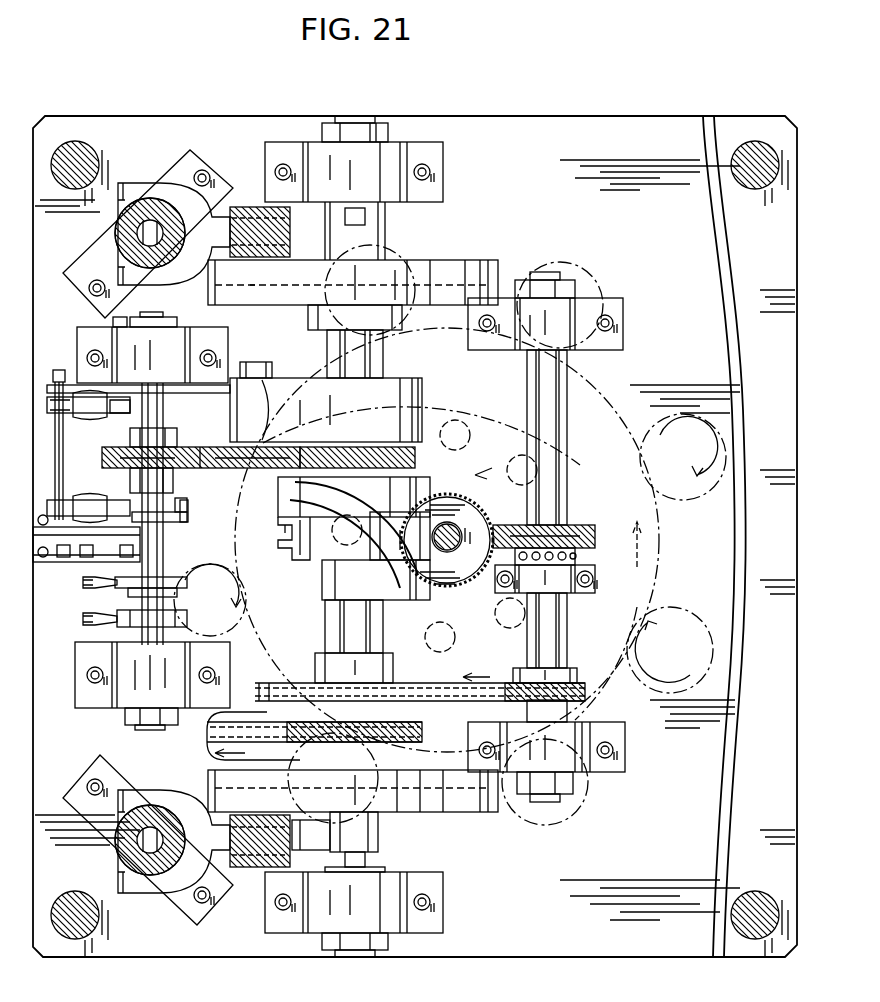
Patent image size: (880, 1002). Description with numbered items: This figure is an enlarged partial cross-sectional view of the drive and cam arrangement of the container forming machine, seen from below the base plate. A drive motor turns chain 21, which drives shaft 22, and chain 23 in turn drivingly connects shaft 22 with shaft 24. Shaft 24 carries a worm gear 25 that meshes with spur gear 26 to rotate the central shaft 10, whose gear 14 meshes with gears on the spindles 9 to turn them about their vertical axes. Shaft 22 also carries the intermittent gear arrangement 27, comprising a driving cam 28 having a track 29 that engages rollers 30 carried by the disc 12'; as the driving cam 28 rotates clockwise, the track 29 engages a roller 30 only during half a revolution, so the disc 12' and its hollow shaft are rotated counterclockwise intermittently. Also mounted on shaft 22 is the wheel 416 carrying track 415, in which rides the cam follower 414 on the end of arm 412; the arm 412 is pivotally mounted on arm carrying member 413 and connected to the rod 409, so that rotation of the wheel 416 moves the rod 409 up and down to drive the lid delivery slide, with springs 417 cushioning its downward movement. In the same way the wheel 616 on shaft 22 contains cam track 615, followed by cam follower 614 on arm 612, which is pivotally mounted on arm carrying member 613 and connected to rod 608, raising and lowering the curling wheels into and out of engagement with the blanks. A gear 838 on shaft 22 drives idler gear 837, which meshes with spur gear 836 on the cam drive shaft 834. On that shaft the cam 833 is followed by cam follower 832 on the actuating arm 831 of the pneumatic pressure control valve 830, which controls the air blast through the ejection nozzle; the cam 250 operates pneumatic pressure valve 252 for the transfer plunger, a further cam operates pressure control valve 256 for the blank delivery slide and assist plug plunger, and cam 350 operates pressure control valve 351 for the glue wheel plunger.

The spindles 9 is at (688, 500).
The shaft 10 is at (457, 532).
The disc 12' is at (447, 540).
The gear 14 is at (652, 578).
The chain 21 is at (210, 724).
The shaft 22 is at (332, 624).
The chain 23 is at (588, 689).
The shaft 24 is at (557, 643).
The worm gear 25 is at (590, 523).
The spur gear 26 is at (462, 580).
The intermittent gear arrangement 27 is at (422, 606).
The driving cam 28 is at (326, 576).
The track 29 is at (300, 497).
The rollers 30 is at (457, 418).
The cam 250 is at (180, 618).
The pneumatic pressure valve 252 is at (100, 609).
The pressure control valve 256 is at (107, 590).
The cam 350 is at (163, 410).
The pressure control valve 351 is at (112, 408).
The rod 409 is at (127, 226).
The arm 412 is at (140, 192).
The arm carrying member 413 is at (248, 207).
The cam follower 414 is at (383, 268).
The track 415 is at (490, 298).
The wheel 416 is at (447, 262).
The springs 417 is at (208, 170).
The rod 608 is at (123, 848).
The arm 612 is at (167, 883).
The arm carrying member 613 is at (260, 865).
The cam follower 614 is at (382, 805).
The cam track 615 is at (217, 797).
The wheel 616 is at (454, 813).
The pneumatic pressure control valve 830 is at (90, 537).
The actuating arm 831 is at (96, 503).
The cam follower 832 is at (126, 507).
The cam 833 is at (184, 515).
The cam drive shaft 834 is at (157, 557).
The spur gear 836 is at (110, 452).
The idler gear 837 is at (220, 448).
The gear 838 is at (410, 458).